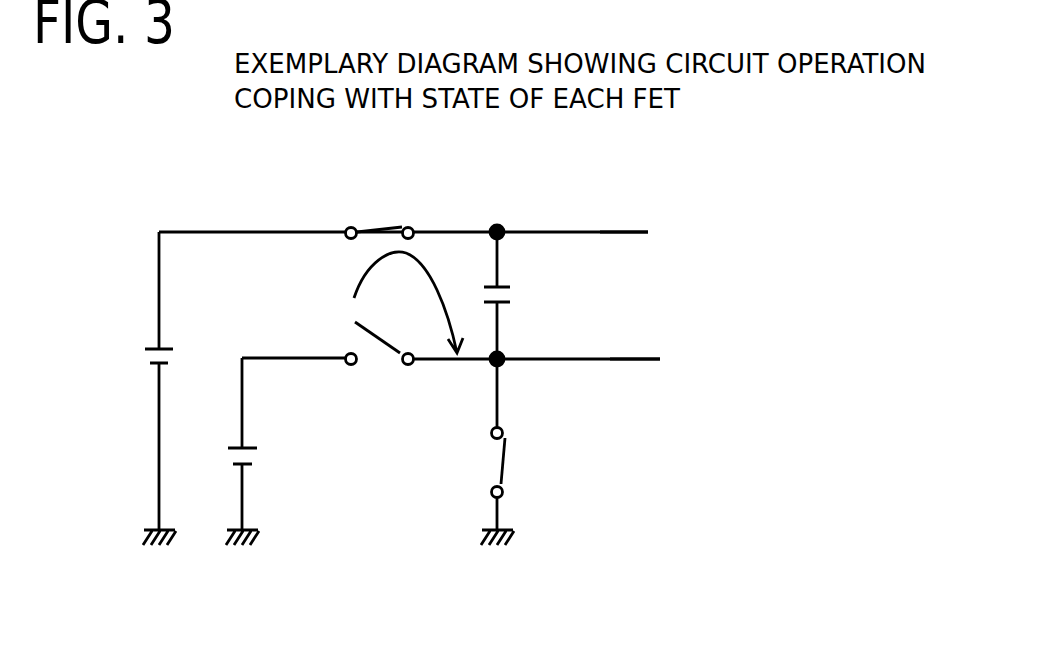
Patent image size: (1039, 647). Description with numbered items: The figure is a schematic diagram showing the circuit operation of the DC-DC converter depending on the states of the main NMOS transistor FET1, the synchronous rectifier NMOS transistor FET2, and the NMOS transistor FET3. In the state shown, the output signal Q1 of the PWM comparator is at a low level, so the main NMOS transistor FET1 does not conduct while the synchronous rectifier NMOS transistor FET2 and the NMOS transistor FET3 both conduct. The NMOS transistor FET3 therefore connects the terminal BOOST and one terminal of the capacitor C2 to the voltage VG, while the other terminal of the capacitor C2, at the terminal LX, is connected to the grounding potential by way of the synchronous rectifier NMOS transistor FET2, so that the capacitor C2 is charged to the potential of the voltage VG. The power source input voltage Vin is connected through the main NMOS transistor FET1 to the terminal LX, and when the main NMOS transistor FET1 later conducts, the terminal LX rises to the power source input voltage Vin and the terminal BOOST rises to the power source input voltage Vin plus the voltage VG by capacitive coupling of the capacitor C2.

The NMOS transistor FET3 is at (370, 208).
The main NMOS transistor FET1 is at (380, 368).
The synchronous rectifier NMOS transistor FET2 is at (536, 463).
The capacitor C2 is at (517, 297).
The voltage VG is at (138, 358).
The power source input voltage Vin is at (219, 450).
The terminal BOOST is at (674, 233).
The terminal LX is at (656, 362).